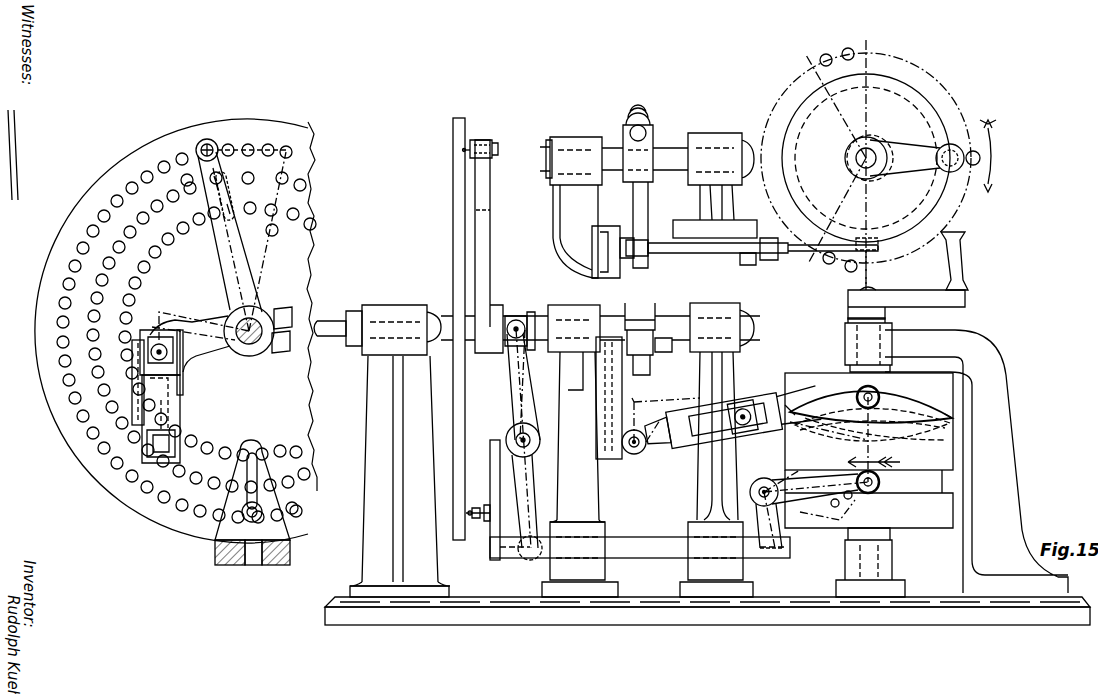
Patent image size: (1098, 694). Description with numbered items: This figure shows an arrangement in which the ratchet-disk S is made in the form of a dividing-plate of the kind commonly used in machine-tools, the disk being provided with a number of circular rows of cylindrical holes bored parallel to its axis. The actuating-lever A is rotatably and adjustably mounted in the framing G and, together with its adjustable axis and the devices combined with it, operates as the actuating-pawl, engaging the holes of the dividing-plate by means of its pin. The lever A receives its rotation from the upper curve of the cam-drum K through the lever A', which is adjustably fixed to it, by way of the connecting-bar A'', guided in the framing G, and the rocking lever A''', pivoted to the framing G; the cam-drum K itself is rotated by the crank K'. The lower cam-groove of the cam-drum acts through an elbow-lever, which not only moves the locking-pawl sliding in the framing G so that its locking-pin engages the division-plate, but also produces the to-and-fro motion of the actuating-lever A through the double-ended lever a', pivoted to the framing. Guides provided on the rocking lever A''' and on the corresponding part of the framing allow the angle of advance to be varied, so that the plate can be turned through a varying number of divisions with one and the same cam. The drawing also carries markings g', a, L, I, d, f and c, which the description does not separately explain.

The ratchet-disk S is at (310, 208).
The actuating-lever A is at (353, 248).
The lever A' is at (409, 245).
The connecting-bar A'' is at (421, 348).
The rocking lever A''' is at (760, 345).
The framing G is at (125, 395).
The rod g' is at (640, 534).
The double-ended lever a' is at (521, 438).
The rod end a is at (850, 261).
The cam-drum K is at (869, 450).
The crank K' is at (906, 302).
The cam follower L is at (783, 424).
The cam edge I is at (951, 419).
The hand wheel d is at (878, 162).
The wheel position line f is at (836, 103).
The wheel position line c is at (845, 215).